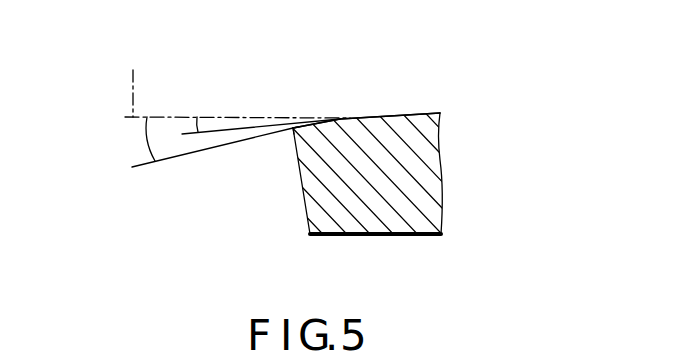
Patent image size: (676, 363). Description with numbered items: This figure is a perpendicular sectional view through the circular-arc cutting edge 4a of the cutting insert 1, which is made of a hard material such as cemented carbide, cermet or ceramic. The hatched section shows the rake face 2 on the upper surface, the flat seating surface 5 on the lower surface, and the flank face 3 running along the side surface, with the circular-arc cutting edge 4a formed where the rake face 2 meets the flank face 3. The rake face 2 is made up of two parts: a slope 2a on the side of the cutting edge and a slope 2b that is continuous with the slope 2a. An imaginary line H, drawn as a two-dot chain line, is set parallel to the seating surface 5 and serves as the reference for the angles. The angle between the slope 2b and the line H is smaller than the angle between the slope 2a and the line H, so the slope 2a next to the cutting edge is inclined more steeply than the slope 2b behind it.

The cutting insert 1 is at (478, 127).
The rake face 2 is at (419, 104).
The slope 2a is at (299, 125).
The slope 2b is at (367, 116).
The flank face 3 is at (301, 185).
The circular-arc cutting edge 4a is at (293, 129).
The seating surface 5 is at (378, 236).
The line H is at (236, 81).